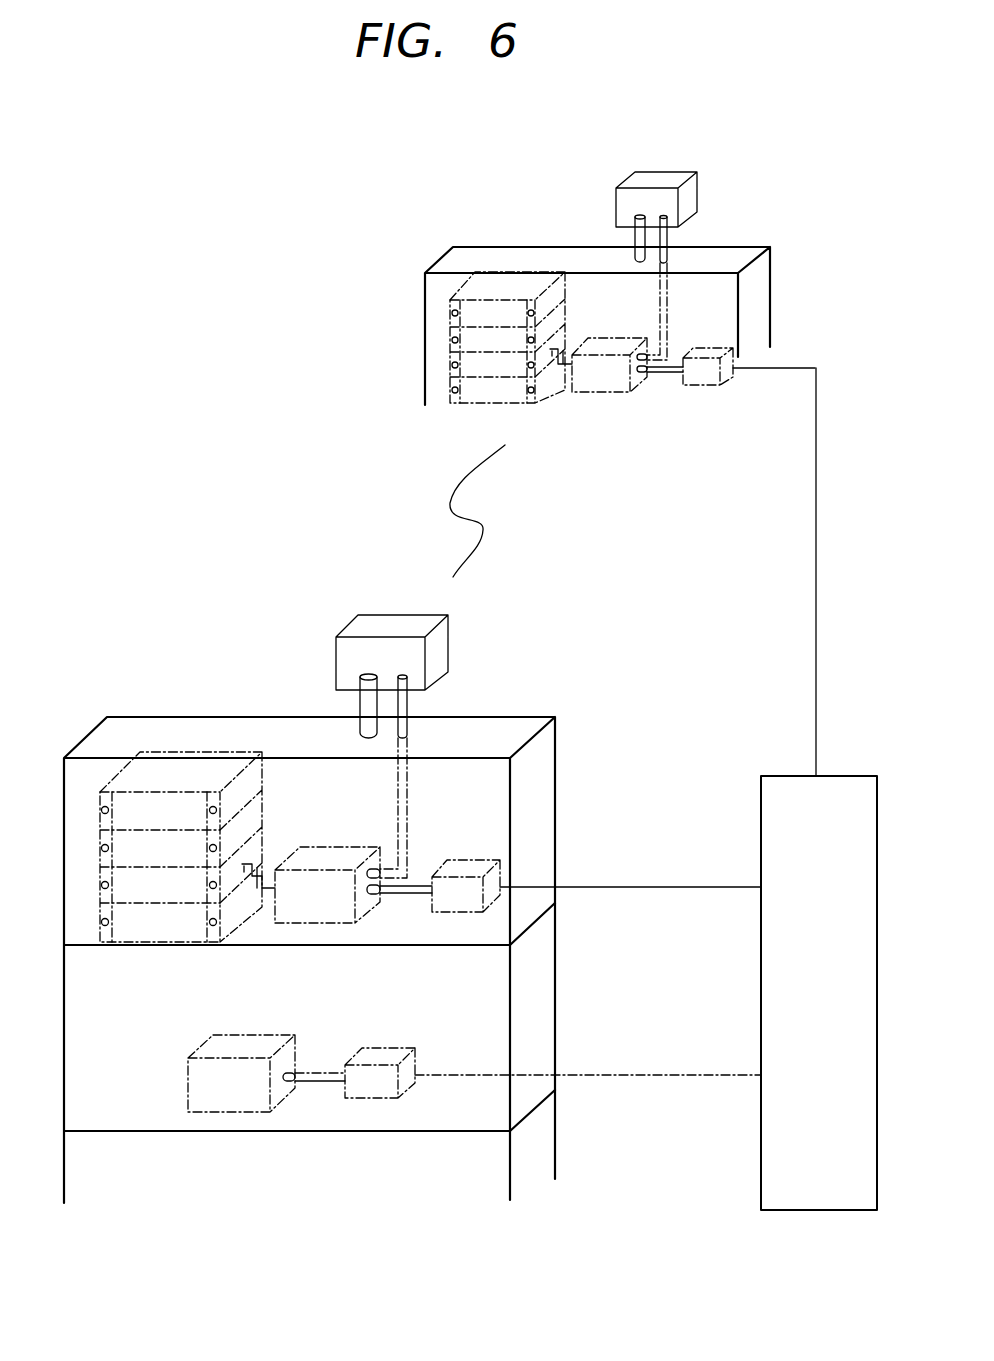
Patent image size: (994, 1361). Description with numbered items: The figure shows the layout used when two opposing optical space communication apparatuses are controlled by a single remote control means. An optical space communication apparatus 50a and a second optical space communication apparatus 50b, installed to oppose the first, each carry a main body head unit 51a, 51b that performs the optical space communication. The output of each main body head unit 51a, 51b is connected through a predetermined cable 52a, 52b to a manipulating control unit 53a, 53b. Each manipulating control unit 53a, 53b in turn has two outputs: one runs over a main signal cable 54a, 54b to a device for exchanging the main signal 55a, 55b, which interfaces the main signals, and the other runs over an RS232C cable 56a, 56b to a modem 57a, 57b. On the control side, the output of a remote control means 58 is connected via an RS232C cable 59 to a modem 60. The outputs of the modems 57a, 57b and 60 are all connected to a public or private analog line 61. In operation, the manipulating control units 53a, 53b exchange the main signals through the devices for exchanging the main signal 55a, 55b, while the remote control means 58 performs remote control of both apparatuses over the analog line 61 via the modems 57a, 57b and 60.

The optical space communication apparatus 50a is at (231, 655).
The optical space communication apparatus 50b is at (542, 200).
The main body head unit 51a is at (369, 621).
The main body head unit 51b is at (640, 180).
The predetermined cable 52a is at (408, 797).
The predetermined cable 52b is at (668, 302).
The manipulating control unit 53a is at (298, 917).
The manipulating control unit 53b is at (582, 383).
The main signal cable 54a is at (258, 877).
The main signal cable 54b is at (563, 357).
The device for exchanging the main signal 55a is at (153, 770).
The device for exchanging the main signal 55b is at (488, 282).
The RS232C cable 56a is at (398, 894).
The RS232C cable 56b is at (660, 377).
The modem 57a is at (458, 907).
The modem 57b is at (703, 380).
The remote control means 58 is at (215, 1103).
The RS232C cable 59 is at (317, 1082).
The modem 60 is at (373, 1093).
The analog line 61 is at (761, 1152).